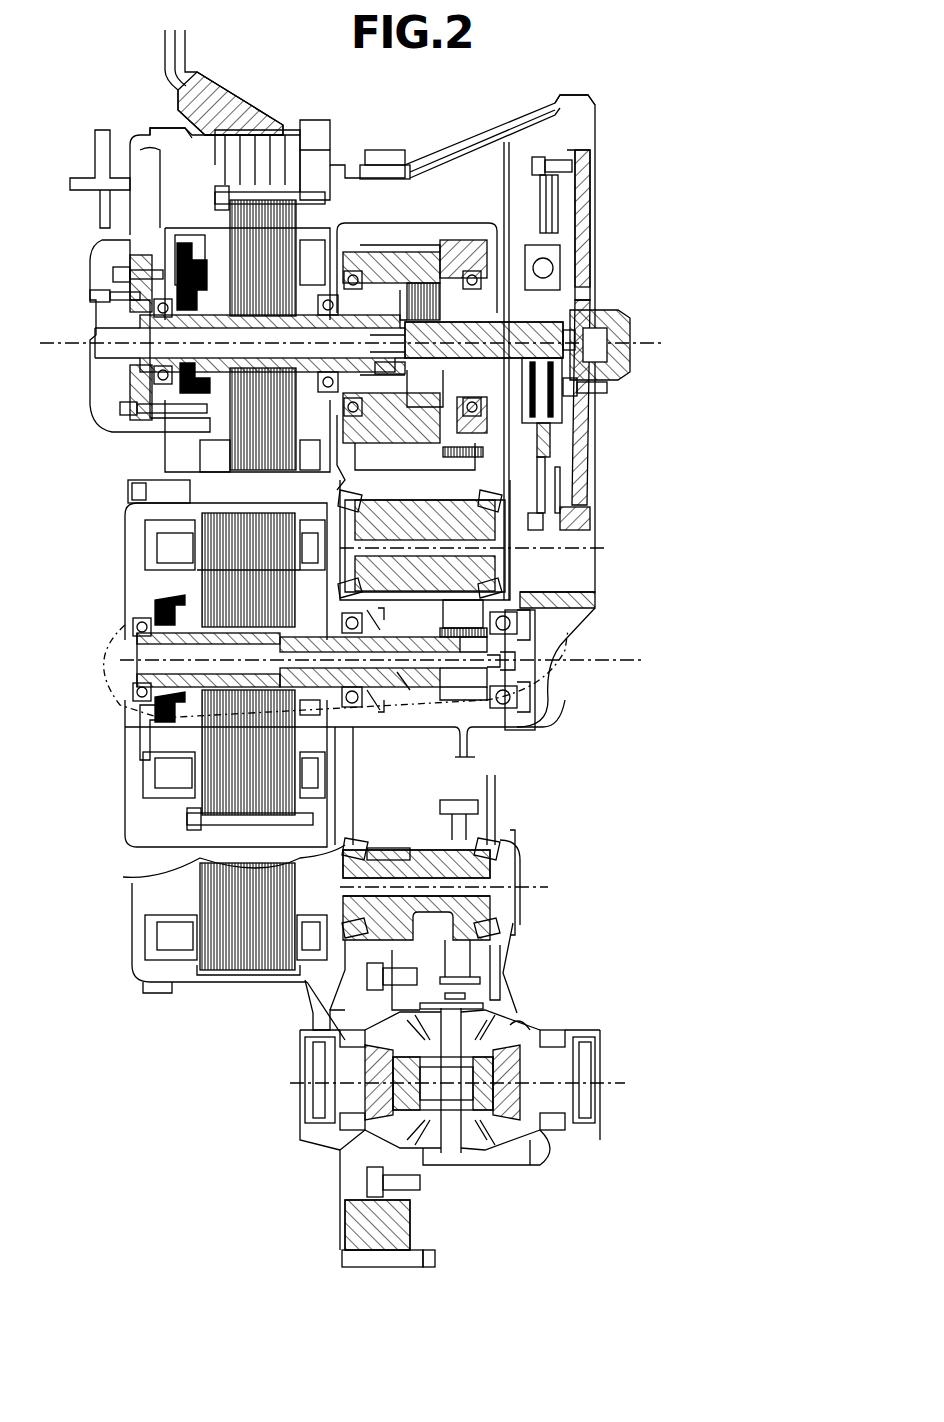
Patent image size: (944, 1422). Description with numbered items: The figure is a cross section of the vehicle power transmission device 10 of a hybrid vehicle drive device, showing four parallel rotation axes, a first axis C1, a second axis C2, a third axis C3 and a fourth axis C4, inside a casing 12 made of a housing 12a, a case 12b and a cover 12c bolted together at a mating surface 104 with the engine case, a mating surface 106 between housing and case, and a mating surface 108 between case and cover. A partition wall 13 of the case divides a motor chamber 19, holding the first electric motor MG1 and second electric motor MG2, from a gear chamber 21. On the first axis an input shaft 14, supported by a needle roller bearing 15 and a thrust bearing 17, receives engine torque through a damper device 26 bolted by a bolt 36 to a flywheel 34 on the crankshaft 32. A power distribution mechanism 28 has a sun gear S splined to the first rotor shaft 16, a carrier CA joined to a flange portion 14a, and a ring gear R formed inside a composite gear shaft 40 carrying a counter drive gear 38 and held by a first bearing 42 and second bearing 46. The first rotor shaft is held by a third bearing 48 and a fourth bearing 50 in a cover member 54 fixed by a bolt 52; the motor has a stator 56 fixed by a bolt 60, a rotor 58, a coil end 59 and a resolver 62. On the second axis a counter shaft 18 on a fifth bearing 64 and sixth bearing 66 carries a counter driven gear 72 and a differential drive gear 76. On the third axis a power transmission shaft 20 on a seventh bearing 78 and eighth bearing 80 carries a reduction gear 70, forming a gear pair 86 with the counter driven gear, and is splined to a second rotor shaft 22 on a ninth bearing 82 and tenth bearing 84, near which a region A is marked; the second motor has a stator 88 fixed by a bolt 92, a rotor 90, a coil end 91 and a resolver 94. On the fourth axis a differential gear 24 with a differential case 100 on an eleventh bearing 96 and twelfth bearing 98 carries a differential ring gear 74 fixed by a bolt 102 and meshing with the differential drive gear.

The vehicle power transmission device 10 is at (655, 90).
The casing 12 is at (398, 150).
The housing 12a is at (480, 140).
The case 12b is at (322, 180).
The cover 12c is at (90, 240).
The partition wall 13 is at (345, 420).
The input shaft 14 is at (612, 320).
The flange portion 14a is at (426, 388).
The needle roller bearing 15 is at (555, 280).
The first rotor shaft 16 is at (258, 325).
The thrust bearing 17 is at (500, 320).
The counter shaft 18 is at (440, 520).
The motor chamber 19 is at (160, 165).
The power transmission shaft 20 is at (397, 694).
The gear chamber 21 is at (415, 488).
The second rotor shaft 22 is at (214, 632).
The differential gear 24 is at (505, 1150).
The damper device 26 is at (562, 238).
The power distribution mechanism 28 is at (400, 378).
The crankshaft 32 is at (633, 350).
The flywheel 34 is at (582, 178).
The bolt 36 is at (585, 145).
The counter drive gear 38 is at (472, 240).
The composite gear shaft 40 is at (430, 235).
The first bearing 42 is at (480, 410).
The second bearing 46 is at (368, 440).
The third bearing 48 is at (320, 385).
The fourth bearing 50 is at (150, 385).
The bolt 52 is at (100, 248).
The cover member 54 is at (140, 290).
The stator 56 is at (245, 215).
The rotor 58 is at (282, 282).
The coil end 59 is at (205, 455).
The bolt 60 is at (285, 180).
The resolver 62 is at (175, 255).
The fifth bearing 64 is at (540, 600).
The sixth bearing 66 is at (345, 505).
The reduction gear 70 is at (458, 690).
The counter driven gear 72 is at (443, 452).
The differential ring gear 74 is at (400, 1225).
The differential drive gear 76 is at (390, 590).
The seventh bearing 78 is at (503, 710).
The eighth bearing 80 is at (340, 705).
The ninth bearing 82 is at (312, 723).
The tenth bearing 84 is at (140, 625).
The gear pair 86 is at (440, 630).
The stator 88 is at (230, 790).
The rotor 90 is at (213, 580).
The coil end 91 is at (170, 772).
The bolt 92 is at (150, 860).
The resolver 94 is at (150, 722).
The eleventh bearing 96 is at (555, 1032).
The twelfth bearing 98 is at (340, 1130).
The differential case 100 is at (523, 1022).
The bolt 102 is at (410, 1182).
The mating surface 104 is at (578, 120).
The mating surface 106 is at (400, 170).
The mating surface 108 is at (178, 142).
The first electric motor MG1 is at (172, 200).
The second electric motor MG2 is at (165, 825).
The ring gear R is at (430, 262).
The carrier CA is at (412, 310).
The sun gear S is at (398, 372).
The region A is at (100, 682).
The first axis C1 is at (660, 346).
The second axis C2 is at (590, 548).
The third axis C3 is at (618, 662).
The fourth axis C4 is at (618, 1084).